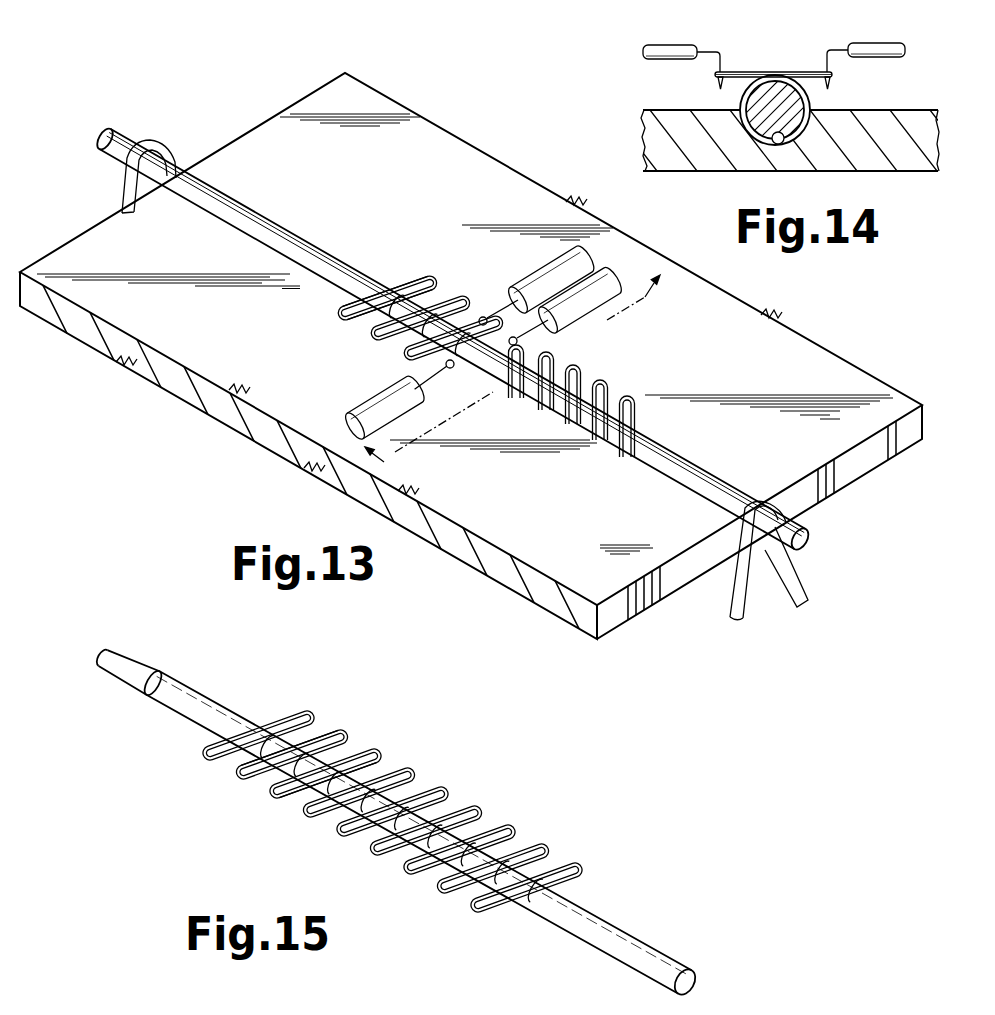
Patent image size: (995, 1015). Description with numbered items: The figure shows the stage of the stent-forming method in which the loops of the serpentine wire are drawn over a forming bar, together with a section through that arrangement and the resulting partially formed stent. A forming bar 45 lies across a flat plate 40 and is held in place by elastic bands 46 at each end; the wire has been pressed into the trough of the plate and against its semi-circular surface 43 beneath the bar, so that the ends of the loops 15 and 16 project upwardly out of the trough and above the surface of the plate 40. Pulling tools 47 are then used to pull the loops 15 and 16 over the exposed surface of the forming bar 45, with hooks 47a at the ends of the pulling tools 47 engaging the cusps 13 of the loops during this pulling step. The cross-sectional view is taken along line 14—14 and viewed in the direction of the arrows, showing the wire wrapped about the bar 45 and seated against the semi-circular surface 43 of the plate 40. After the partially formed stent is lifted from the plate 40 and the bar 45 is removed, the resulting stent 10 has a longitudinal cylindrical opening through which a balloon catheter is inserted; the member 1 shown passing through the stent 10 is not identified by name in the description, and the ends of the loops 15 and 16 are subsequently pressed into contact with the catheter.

In FIG. 15, the mandrel rod 1 is at (153, 655).
In FIG. 15, the stent 10 is at (312, 709).
In FIG. 13, the cusps 13 is at (434, 284).
In FIG. 13, the section line 14— 14 is at (526, 378).
In FIG. 13, the loops 15 is at (413, 273).
In FIG. 14, the loops 15 is at (797, 62).
In FIG. 15, the loops 15 is at (350, 748).
In FIG. 13, the loops 16 is at (404, 338).
In FIG. 14, the loops 16 is at (748, 62).
In FIG. 15, the loops 16 is at (303, 803).
In FIG. 13, the flat plate 40 is at (734, 384).
In FIG. 14, the flat plate 40 is at (652, 133).
In FIG. 14, the semi-circular surface 43 is at (780, 144).
In FIG. 13, the forming bar 45 is at (694, 467).
In FIG. 14, the forming bar 45 is at (795, 102).
In FIG. 13, the elastic bands 46 is at (150, 148).
In FIG. 13, the pulling tools 47 is at (550, 272).
In FIG. 14, the pulling tools 47 is at (672, 45).
In FIG. 13, the hooks 47a is at (495, 318).
In FIG. 14, the hooks 47a is at (716, 46).